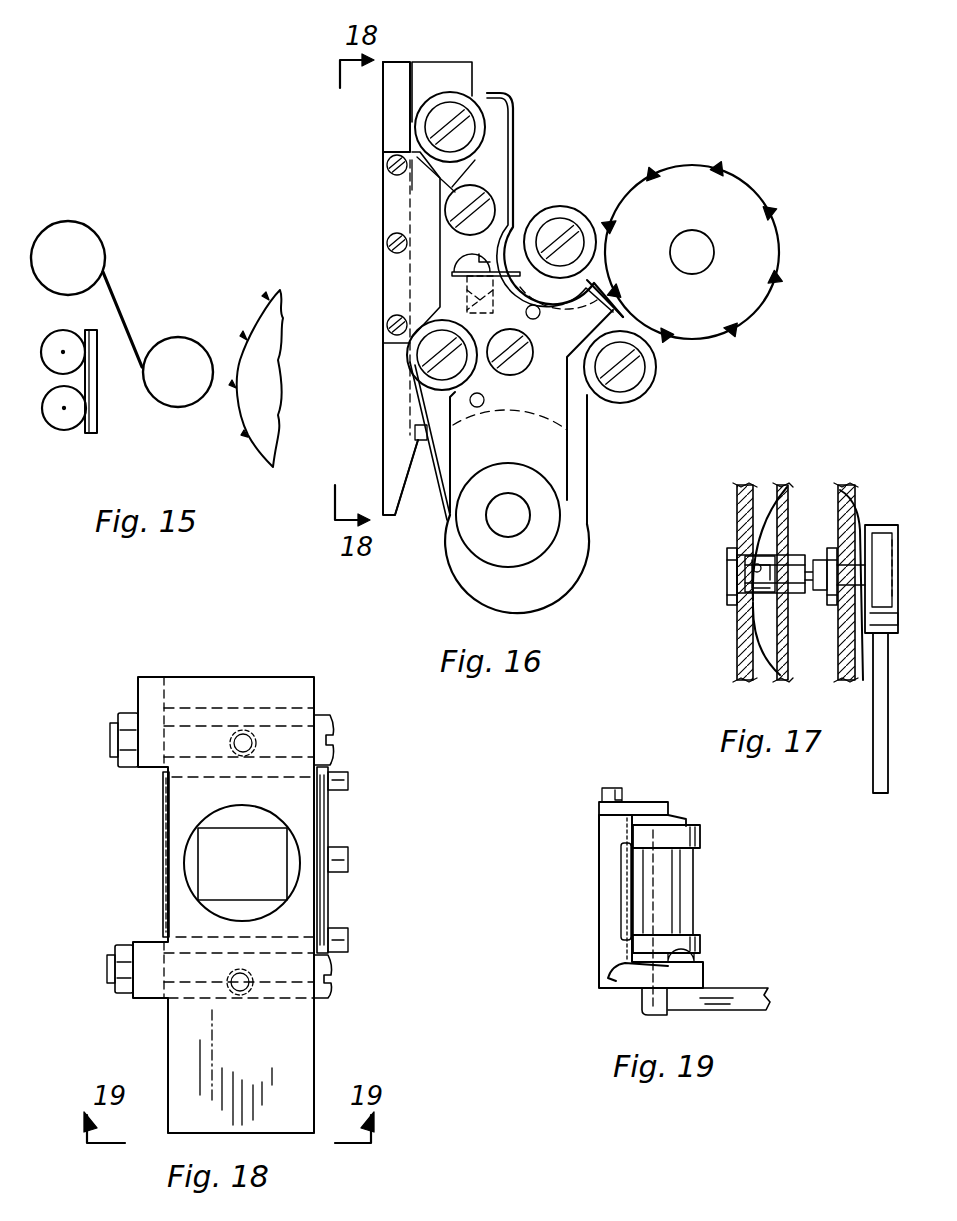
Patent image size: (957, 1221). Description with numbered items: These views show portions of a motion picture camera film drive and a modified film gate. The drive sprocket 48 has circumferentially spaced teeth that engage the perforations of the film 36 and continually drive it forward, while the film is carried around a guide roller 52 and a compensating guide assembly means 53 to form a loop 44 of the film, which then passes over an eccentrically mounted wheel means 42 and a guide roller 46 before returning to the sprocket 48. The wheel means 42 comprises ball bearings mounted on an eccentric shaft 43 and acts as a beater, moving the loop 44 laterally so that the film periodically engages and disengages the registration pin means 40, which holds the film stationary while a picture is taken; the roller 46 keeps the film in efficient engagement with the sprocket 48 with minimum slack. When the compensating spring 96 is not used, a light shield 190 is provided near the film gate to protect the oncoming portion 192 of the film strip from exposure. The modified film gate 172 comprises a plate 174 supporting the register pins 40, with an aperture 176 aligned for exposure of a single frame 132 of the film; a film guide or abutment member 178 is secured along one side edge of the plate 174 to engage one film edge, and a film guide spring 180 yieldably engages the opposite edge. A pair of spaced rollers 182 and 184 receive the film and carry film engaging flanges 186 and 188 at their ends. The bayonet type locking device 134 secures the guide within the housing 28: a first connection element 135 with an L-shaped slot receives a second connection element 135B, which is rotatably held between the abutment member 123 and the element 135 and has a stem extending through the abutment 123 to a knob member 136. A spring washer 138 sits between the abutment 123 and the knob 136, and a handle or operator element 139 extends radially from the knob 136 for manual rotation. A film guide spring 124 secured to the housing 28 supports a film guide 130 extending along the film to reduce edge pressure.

In FIG. 15, the compensating guide assembly means 53 is at (100, 228).
In FIG. 16, the compensating guide assembly means 53 is at (490, 92).
In FIG. 15, the oncoming portion of the film strip 192 is at (120, 298).
In FIG. 15, the guide roller 52 is at (176, 345).
In FIG. 16, the guide roller 52 is at (572, 215).
In FIG. 15, the drive sprocket 48 is at (266, 308).
In FIG. 16, the drive sprocket 48 is at (760, 232).
In FIG. 15, the light shield 190 is at (97, 410).
In FIG. 16, the roller 184 is at (443, 115).
In FIG. 16, the compensating spring 96 is at (514, 120).
In FIG. 16, the plate 174 is at (395, 115).
In FIG. 18, the plate 174 is at (286, 1041).
In FIG. 19, the plate 174 is at (610, 930).
In FIG. 16, the modified film gate 172 is at (372, 221).
In FIG. 18, the modified film gate 172 is at (231, 672).
In FIG. 16, the film guide or abutment member 178 is at (395, 275).
In FIG. 18, the film guide or abutment member 178 is at (326, 813).
In FIG. 16, the roller 182 is at (430, 350).
In FIG. 19, the roller 182 is at (678, 893).
In FIG. 16, the registration pin means 40 is at (425, 437).
In FIG. 16, the eccentric shaft 43 is at (505, 518).
In FIG. 16, the eccentrically mounted wheel means 42 is at (556, 583).
In FIG. 16, the loop of the film 44 is at (588, 463).
In FIG. 16, the guide roller 46 is at (648, 390).
In FIG. 17, the housing 28 is at (740, 503).
In FIG. 17, the film guide spring 124 is at (778, 490).
In FIG. 17, the bayonet type locking device 134 is at (806, 530).
In FIG. 17, the first post abutment or film edge guide member 123 is at (848, 490).
In FIG. 17, the spring washer 138 is at (837, 548).
In FIG. 17, the second connection element 135B is at (793, 570).
In FIG. 17, the first connection element 135 is at (735, 606).
In FIG. 17, the film guide 130 is at (790, 648).
In FIG. 17, the knob member 136 is at (862, 680).
In FIG. 17, the handle or operator element 139 is at (880, 784).
In FIG. 18, the single frame of the film 132 is at (262, 872).
In FIG. 18, the aperture 176 is at (294, 878).
In FIG. 19, the aperture 176 is at (640, 808).
In FIG. 18, the film guide spring 180 is at (160, 894).
In FIG. 19, the film guide spring 180 is at (630, 972).
In FIG. 19, the film 36 is at (628, 893).
In FIG. 19, the film engaging flange 188 is at (700, 832).
In FIG. 19, the film engaging flange 186 is at (700, 946).